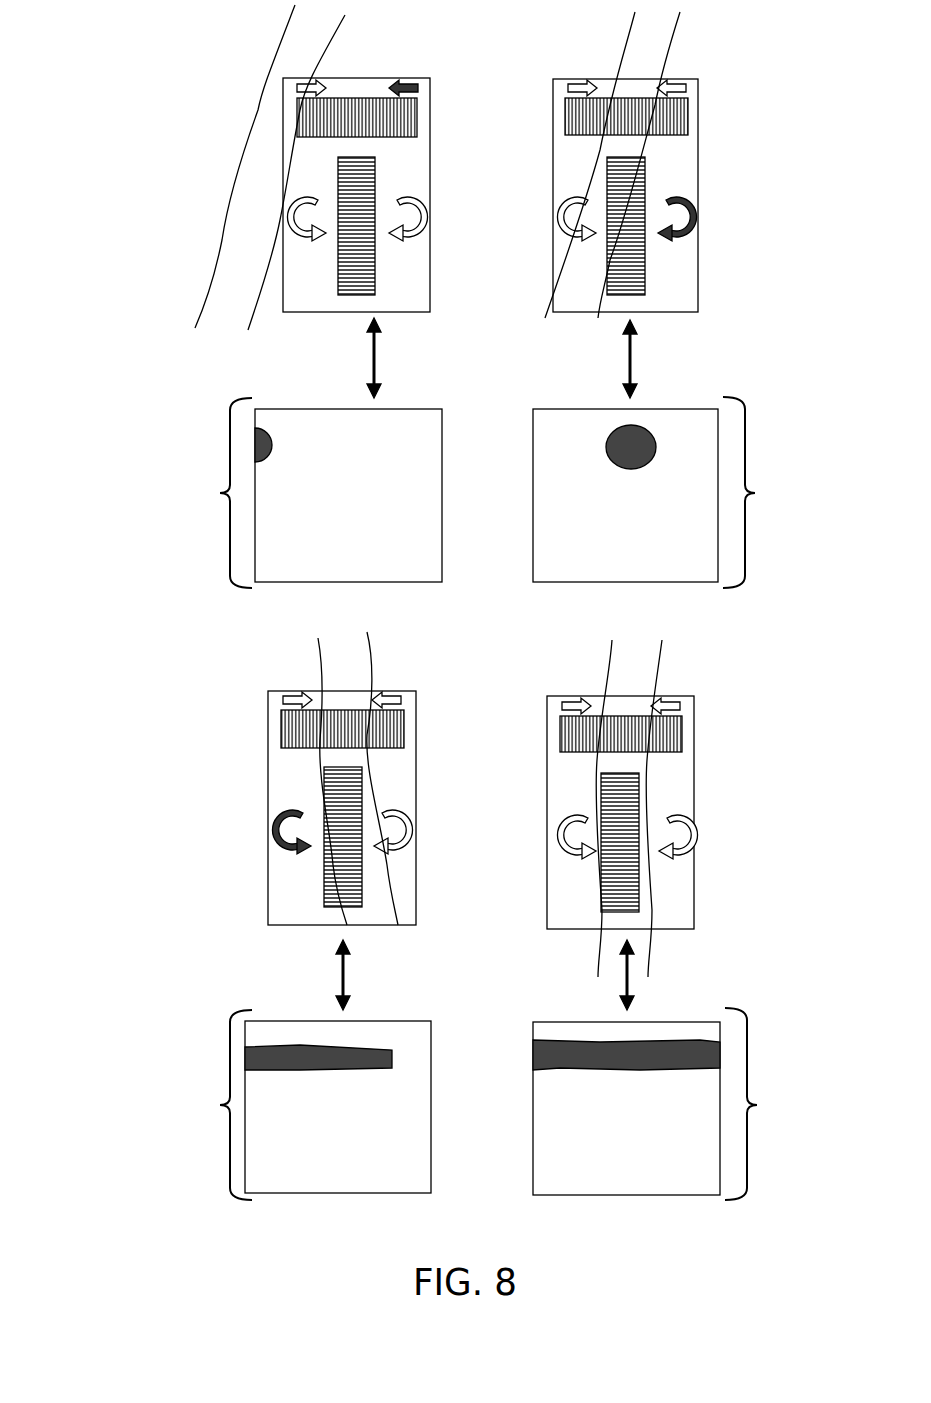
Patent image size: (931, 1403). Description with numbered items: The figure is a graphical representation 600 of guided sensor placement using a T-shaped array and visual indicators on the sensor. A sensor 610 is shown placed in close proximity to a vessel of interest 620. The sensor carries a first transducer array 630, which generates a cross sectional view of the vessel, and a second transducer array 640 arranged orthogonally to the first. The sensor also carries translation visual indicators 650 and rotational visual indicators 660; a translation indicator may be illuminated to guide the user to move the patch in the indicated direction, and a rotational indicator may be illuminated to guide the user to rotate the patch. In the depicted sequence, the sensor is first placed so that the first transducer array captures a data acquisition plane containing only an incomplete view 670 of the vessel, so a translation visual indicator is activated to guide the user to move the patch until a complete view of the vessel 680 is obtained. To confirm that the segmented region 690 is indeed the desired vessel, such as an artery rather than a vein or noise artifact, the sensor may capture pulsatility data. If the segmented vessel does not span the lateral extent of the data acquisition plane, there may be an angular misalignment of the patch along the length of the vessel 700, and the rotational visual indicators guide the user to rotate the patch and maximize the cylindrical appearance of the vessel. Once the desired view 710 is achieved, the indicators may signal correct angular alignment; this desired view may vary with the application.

The graphical representation 600 is at (143, 1181).
The sensor 610 is at (432, 97).
The vessel of interest 620 is at (232, 190).
The first transducer array 630 is at (300, 108).
The second transducer array 640 is at (373, 287).
The translation visual indicators 650 is at (410, 82).
The rotational visual indicators 660 is at (305, 233).
The incomplete view 670 is at (298, 493).
The complete view of the vessel 680 is at (680, 459).
The segmented region 690 is at (652, 433).
The angular misalignment along the length of the vessel 700 is at (293, 1105).
The desired view 710 is at (680, 1104).